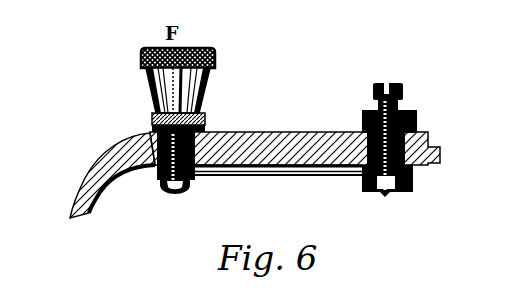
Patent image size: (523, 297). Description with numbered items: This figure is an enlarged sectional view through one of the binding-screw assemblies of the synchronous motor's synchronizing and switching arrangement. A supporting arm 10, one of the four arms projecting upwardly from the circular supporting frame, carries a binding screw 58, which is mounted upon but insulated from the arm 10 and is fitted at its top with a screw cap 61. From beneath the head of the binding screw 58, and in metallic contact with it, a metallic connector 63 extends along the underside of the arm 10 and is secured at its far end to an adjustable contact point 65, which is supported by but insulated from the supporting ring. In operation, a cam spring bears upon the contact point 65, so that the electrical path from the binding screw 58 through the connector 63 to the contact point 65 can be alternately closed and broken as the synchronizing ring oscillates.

The supporting arm 10 is at (260, 132).
The binding screw 58 is at (169, 194).
The screw cap 61 is at (211, 82).
The metallic connector 63 is at (254, 176).
The adjustable contact point 65 is at (397, 198).